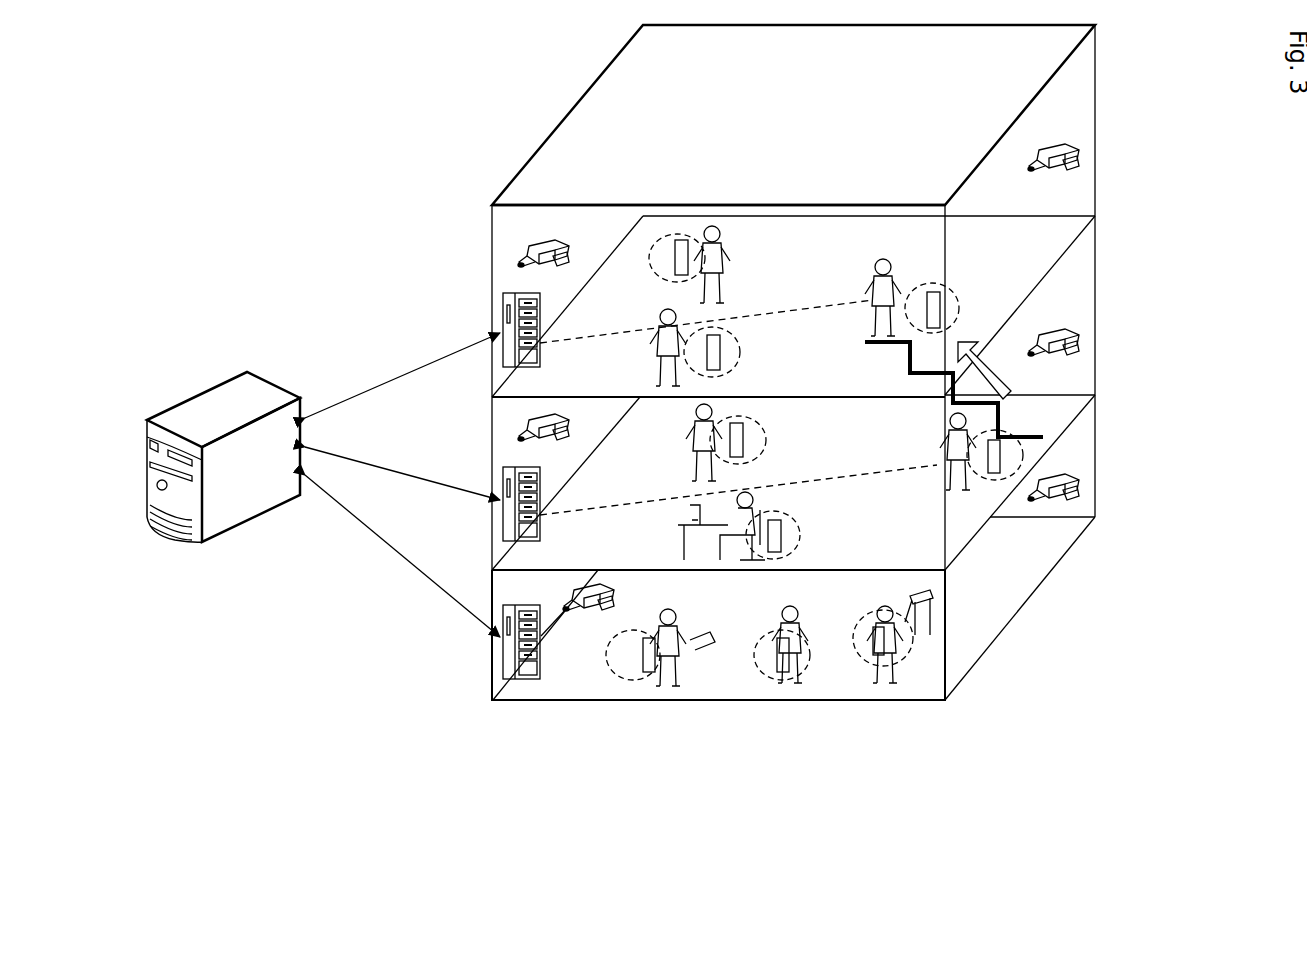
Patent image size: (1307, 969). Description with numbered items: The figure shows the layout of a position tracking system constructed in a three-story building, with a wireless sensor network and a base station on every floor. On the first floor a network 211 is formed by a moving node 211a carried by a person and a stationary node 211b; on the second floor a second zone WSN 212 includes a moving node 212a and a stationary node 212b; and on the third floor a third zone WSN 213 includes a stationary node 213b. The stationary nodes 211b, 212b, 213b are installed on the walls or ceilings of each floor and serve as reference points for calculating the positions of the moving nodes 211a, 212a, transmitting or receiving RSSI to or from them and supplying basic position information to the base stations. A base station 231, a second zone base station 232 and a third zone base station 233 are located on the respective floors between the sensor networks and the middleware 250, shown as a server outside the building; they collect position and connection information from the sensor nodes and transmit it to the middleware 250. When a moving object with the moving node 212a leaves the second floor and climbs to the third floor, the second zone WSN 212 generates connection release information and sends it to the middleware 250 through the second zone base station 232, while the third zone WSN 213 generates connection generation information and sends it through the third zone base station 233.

The WSN middleware 250 is at (200, 396).
The third zone base station 233 is at (503, 305).
The second zone base station 232 is at (503, 478).
The base station 231 is at (503, 660).
The third zone WSN 213 is at (1095, 65).
The second zone WSN 212 is at (1095, 270).
The network 211 is at (1095, 413).
The stationary node 213b is at (1078, 155).
The stationary node 212b is at (1078, 338).
The stationary node 211b is at (1078, 482).
The moving node 212a is at (1020, 445).
The moving node 211a is at (635, 678).